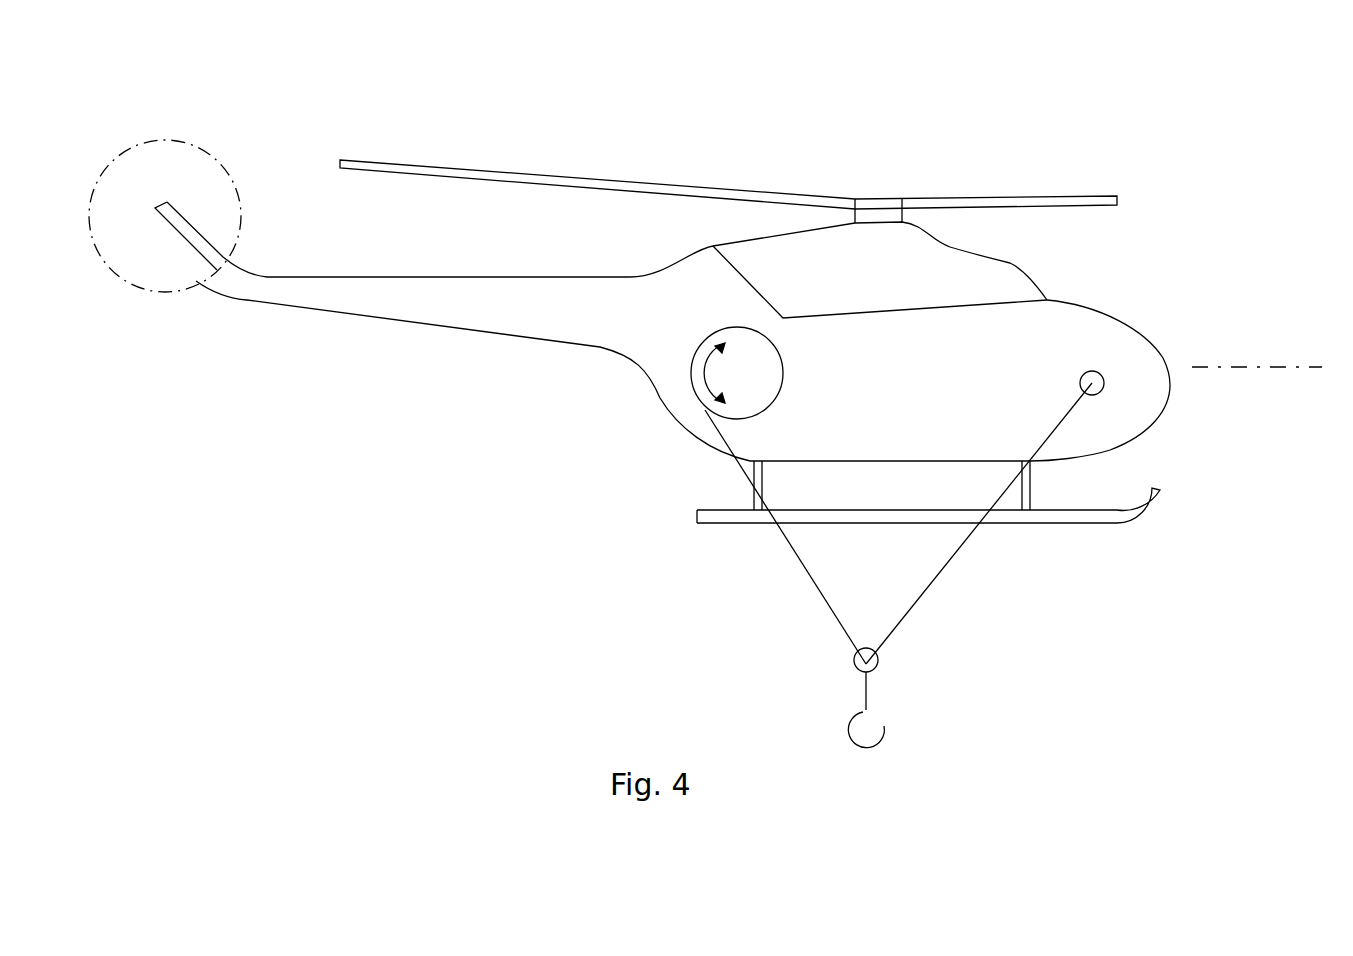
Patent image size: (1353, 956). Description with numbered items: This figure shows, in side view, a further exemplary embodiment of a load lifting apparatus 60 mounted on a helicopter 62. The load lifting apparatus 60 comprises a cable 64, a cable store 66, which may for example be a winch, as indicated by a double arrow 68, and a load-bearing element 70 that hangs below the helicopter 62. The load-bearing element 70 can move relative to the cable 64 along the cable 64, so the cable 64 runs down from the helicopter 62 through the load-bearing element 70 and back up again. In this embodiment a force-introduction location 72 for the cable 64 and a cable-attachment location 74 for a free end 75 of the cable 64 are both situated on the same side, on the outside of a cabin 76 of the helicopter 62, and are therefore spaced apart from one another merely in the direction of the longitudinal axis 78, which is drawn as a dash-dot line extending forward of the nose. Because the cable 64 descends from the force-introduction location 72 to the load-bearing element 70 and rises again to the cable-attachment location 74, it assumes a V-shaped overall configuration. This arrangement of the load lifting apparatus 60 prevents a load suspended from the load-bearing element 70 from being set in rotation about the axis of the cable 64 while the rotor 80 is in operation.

The load lifting apparatus 60 is at (663, 547).
The helicopter 62 is at (728, 124).
The cable 64 is at (737, 463).
The cable store 66 is at (730, 378).
The double arrow 68 is at (705, 358).
The load-bearing element 70 is at (880, 695).
The force-introduction location 72 is at (708, 415).
The cable-attachment location 74 is at (1105, 383).
The free end 75 is at (1073, 407).
The cabin 76 is at (980, 365).
The longitudinal axis 78 is at (1278, 367).
The rotor 80 is at (713, 163).